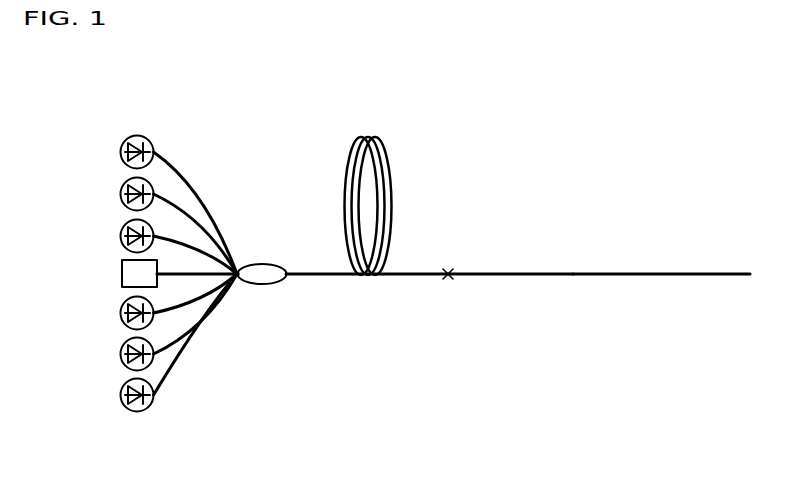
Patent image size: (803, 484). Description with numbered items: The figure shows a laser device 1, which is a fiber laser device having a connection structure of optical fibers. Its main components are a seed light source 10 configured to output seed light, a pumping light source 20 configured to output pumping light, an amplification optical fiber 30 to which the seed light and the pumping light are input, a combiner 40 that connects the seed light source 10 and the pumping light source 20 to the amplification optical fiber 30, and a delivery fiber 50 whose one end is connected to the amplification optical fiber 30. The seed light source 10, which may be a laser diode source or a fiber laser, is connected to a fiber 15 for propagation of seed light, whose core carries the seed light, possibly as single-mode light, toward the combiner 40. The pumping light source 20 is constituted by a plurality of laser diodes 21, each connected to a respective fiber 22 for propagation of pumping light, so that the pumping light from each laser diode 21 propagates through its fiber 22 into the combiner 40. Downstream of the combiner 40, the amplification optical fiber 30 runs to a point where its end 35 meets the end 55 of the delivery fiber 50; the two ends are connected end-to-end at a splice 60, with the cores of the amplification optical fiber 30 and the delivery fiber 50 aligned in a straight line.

The laser device 1 is at (558, 127).
The seed light source 10 is at (147, 279).
The fiber for propagation of seed light 15 is at (228, 262).
The pumping light source 20 is at (53, 212).
The laser diode 21 is at (121, 158).
The fiber for propagation of pumping light 22 is at (172, 208).
The amplification optical fiber 30 is at (387, 272).
The end of the amplification optical fiber 35 is at (446, 276).
The combiner 40 is at (270, 276).
The delivery fiber 50 is at (573, 273).
The end of the delivery fiber 55 is at (452, 277).
The splice 60 is at (449, 270).